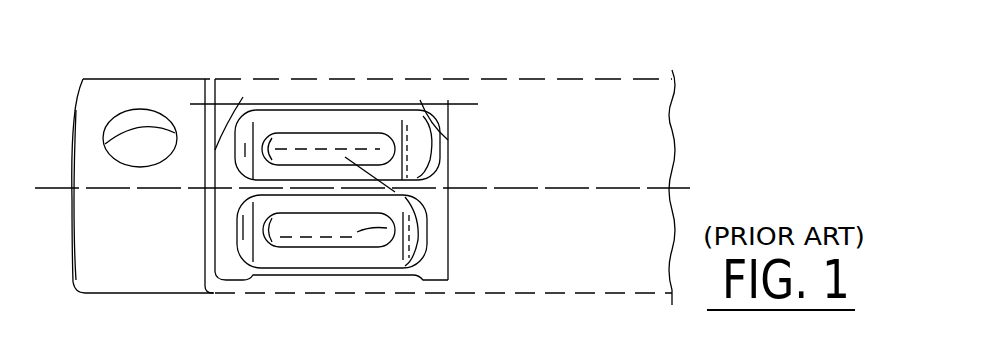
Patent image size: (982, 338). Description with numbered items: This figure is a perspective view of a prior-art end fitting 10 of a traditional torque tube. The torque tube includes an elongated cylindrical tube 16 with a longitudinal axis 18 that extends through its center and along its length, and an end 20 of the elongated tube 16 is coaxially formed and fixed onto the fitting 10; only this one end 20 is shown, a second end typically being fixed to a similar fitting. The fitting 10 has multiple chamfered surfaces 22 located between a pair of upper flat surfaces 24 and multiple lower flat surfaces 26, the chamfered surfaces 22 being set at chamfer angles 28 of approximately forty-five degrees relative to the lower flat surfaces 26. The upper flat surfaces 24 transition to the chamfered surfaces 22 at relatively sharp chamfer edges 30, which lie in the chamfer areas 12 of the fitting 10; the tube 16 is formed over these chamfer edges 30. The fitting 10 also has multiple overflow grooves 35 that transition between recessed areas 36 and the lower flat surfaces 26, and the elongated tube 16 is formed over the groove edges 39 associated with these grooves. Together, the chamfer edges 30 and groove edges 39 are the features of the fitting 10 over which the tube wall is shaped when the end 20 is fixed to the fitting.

The end fitting 10 is at (105, 78).
The chamfer area 12 is at (410, 96).
The elongated cylindrical tube 16 is at (612, 78).
The longitudinal axis 18 is at (565, 188).
The end of the elongated tube 20 is at (340, 293).
The chamfered surface 22 is at (243, 97).
The upper flat surface 24 is at (247, 100).
The lower flat surface 26 is at (321, 107).
The chamfer angle 28 is at (240, 98).
The chamfer edge 30 is at (247, 100).
The overflow groove 35 is at (395, 192).
The recessed area 36 is at (357, 232).
The groove edge 39 is at (250, 112).